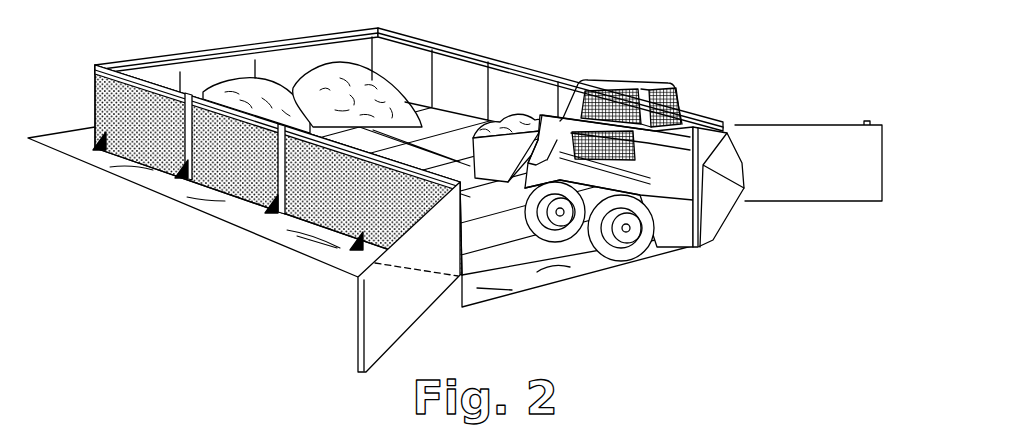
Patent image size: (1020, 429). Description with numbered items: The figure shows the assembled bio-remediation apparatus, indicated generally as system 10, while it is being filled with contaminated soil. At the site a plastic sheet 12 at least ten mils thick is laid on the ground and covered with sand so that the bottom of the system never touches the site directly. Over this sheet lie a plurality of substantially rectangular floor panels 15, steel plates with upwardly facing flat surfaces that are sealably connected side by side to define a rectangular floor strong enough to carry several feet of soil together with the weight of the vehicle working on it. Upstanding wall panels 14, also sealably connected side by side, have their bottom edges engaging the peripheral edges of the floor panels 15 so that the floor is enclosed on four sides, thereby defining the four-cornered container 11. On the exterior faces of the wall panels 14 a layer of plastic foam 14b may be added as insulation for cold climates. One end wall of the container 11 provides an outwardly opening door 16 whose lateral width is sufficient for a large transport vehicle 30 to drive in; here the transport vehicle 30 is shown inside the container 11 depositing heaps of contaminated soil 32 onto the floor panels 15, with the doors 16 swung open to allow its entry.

The system 10 is at (712, 53).
The container 11 is at (472, 53).
The plastic sheet 12 is at (555, 273).
The wall panels 14 is at (446, 106).
The plastic foam 14b is at (213, 165).
The floor panels 15 is at (494, 243).
The door 16 is at (389, 300).
The transport vehicle 30 is at (727, 213).
The contaminated soil 32 is at (337, 63).